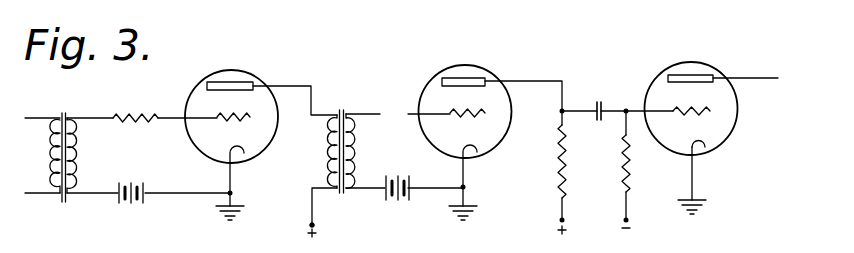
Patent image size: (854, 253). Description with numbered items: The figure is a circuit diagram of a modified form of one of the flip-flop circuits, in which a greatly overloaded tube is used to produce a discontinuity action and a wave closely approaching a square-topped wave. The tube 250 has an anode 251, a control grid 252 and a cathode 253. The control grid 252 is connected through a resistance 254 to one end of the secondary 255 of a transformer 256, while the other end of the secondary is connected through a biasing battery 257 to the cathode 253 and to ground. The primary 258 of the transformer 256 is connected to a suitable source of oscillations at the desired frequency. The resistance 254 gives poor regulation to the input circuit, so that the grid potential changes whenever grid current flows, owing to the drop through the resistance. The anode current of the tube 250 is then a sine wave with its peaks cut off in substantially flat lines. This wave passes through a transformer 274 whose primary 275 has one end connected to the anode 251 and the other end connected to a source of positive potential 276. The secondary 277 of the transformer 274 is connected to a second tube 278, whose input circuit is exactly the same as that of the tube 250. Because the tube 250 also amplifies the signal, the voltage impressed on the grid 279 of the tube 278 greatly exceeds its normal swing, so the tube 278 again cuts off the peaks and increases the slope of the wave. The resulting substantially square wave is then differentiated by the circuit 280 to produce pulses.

The tube 250 is at (229, 71).
The anode 251 is at (212, 83).
The control grid 252 is at (217, 115).
The cathode 253 is at (230, 147).
The resistance 254 is at (139, 117).
The secondary 255 is at (82, 144).
The transformer 256 is at (58, 211).
The biasing battery 257 is at (118, 205).
The primary 258 is at (47, 138).
The transformer 274 is at (345, 103).
The primary 275 is at (327, 168).
The source of positive potential 276 is at (315, 223).
The secondary 277 is at (360, 160).
The second tube 278 is at (455, 66).
The grid 279 is at (452, 112).
The circuit 280 is at (630, 74).